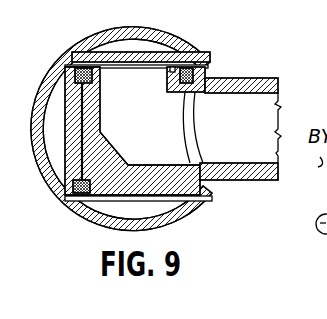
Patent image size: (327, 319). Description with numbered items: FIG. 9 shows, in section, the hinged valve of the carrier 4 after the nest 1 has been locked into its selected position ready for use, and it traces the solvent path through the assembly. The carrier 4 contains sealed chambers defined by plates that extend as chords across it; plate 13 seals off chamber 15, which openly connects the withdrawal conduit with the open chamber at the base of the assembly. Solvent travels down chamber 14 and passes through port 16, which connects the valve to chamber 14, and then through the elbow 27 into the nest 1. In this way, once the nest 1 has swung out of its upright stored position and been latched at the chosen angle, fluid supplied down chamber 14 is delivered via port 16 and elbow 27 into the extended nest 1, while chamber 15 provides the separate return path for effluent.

The nest 1 is at (249, 80).
The carrier 4 is at (62, 58).
The plate 13 is at (90, 197).
The chamber 14 is at (128, 43).
The chamber 15 is at (153, 210).
The port 16 is at (138, 64).
The elbow 27 is at (157, 131).